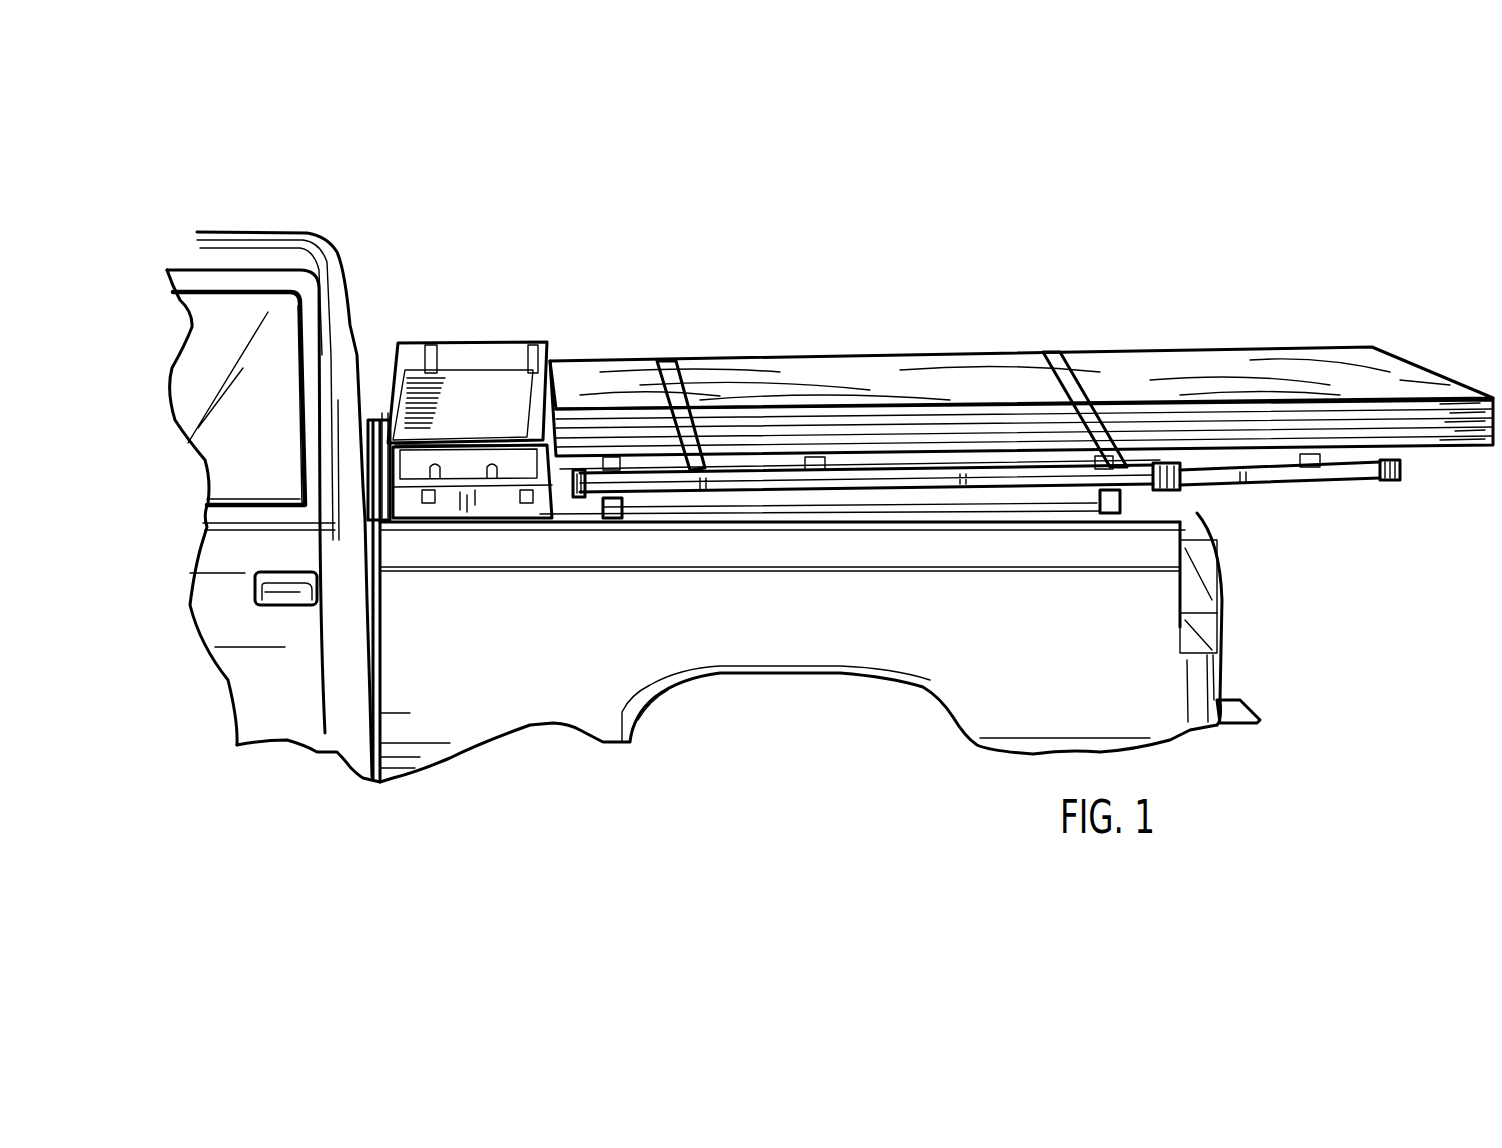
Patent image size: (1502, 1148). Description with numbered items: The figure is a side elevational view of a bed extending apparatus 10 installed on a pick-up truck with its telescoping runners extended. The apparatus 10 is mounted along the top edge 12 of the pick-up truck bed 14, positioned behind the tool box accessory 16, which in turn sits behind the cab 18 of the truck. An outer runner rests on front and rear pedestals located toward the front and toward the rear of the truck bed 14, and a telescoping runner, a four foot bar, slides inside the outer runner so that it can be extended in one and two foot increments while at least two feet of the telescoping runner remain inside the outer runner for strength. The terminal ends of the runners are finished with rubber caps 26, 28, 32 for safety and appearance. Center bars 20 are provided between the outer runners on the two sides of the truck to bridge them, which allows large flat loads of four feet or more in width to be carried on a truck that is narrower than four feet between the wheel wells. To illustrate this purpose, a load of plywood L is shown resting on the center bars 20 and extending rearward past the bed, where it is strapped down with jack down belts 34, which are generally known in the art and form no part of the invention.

The bed extending apparatus 10 is at (895, 468).
The top edge 12 is at (933, 500).
The pick-up truck bed 14 is at (462, 605).
The tool box accessory 16 is at (497, 357).
The cab 18 is at (333, 300).
The center bars 20 is at (612, 463).
The rubber cap 26 is at (580, 497).
The rubber cap 28 is at (1187, 480).
The rubber cap 32 is at (1402, 472).
The jack down belts 34 is at (674, 361).
The load of plywood L is at (1103, 365).